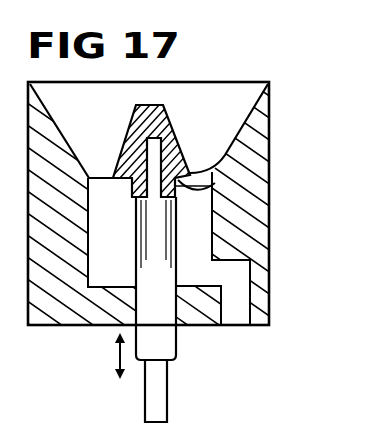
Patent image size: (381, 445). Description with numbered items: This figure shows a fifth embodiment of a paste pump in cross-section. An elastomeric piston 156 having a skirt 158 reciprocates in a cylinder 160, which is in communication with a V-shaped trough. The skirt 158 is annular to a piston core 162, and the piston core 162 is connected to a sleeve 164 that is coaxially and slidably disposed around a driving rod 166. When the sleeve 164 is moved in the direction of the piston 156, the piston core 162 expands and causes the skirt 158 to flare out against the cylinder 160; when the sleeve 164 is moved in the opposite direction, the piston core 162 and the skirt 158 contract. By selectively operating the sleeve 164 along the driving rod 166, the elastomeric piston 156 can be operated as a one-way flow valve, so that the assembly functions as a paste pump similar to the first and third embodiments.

The elastomeric piston 156 is at (176, 128).
The skirt 158 is at (238, 135).
The cylinder 160 is at (215, 235).
The piston core 162 is at (178, 186).
The sleeve 164 is at (176, 337).
The driving rod 166 is at (146, 388).